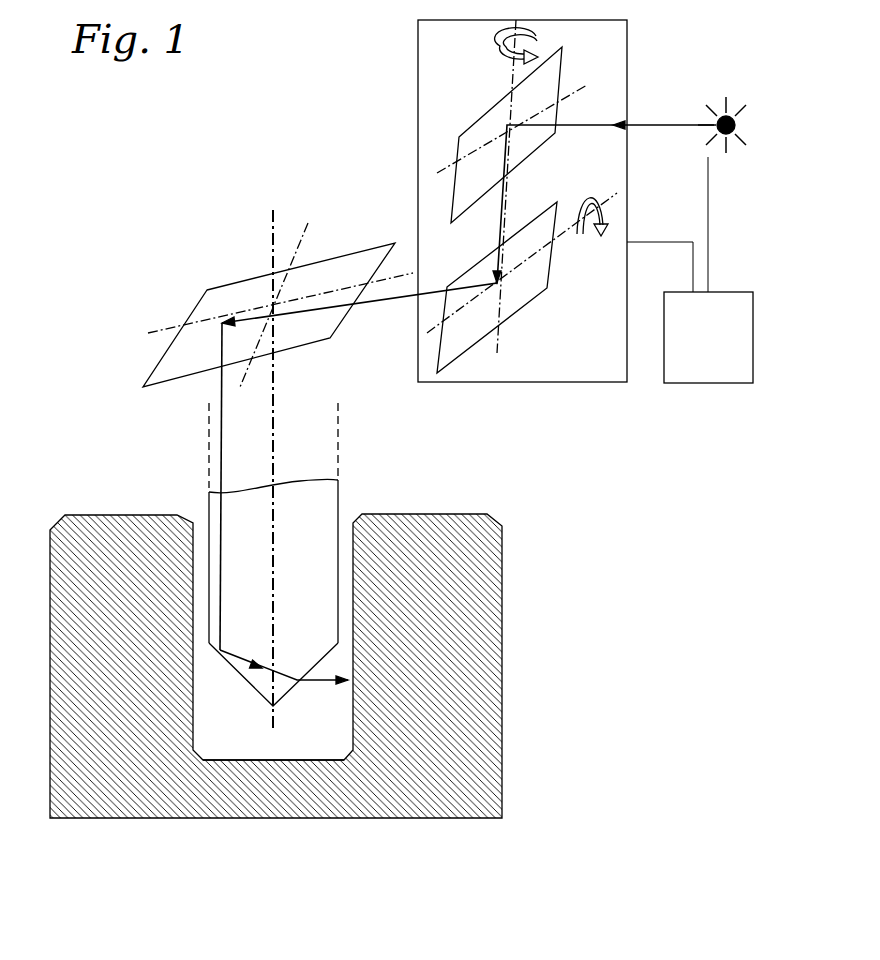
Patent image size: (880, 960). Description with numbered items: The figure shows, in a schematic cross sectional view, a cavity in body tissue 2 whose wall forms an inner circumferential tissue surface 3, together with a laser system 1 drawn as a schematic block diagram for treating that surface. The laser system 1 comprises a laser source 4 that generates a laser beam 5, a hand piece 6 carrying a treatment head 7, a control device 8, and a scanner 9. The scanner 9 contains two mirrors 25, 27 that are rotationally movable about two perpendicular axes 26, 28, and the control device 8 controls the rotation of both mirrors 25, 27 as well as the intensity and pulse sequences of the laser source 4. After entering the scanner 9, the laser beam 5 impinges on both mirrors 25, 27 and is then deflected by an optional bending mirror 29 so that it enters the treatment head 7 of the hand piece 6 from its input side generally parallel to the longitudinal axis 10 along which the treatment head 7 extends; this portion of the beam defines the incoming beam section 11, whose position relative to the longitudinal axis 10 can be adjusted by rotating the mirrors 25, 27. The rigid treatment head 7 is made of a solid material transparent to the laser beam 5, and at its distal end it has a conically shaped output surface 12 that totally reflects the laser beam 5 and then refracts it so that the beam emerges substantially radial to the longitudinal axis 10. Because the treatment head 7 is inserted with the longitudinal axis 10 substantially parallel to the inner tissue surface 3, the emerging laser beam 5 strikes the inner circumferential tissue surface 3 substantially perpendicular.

The laser system 1 is at (278, 165).
The body tissue 2 is at (483, 653).
The inner circumferential tissue surface 3 is at (345, 722).
The laser source 4 is at (720, 112).
The laser beam 5 is at (660, 130).
The hand piece 6 is at (340, 448).
The treatment head 7 is at (273, 561).
The control device 8 is at (690, 270).
The scanner 9 is at (416, 95).
The longitudinal axis 10 is at (277, 418).
The incoming beam section 11 is at (221, 432).
The conically shaped output surface 12 is at (242, 675).
The mirror 25 is at (512, 186).
The axis 26 is at (510, 67).
The mirror 27 is at (522, 283).
The axis 28 is at (557, 237).
The bending mirror 29 is at (228, 297).